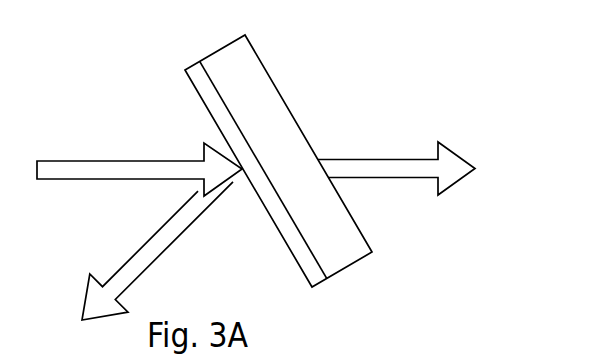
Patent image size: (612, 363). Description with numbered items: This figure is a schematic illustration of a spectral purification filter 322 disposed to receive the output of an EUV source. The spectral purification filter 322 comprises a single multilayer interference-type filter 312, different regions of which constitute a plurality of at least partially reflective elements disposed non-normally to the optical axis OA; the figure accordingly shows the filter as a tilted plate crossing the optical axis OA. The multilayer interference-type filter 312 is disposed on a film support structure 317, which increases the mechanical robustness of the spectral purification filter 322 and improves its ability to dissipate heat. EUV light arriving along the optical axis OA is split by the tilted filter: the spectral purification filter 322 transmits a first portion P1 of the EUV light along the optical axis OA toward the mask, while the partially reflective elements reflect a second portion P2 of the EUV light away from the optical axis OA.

The multilayer interference-type filter 312 is at (348, 267).
The film support structure 317 is at (200, 97).
The spectral purification filter 322 is at (273, 177).
The first portion of the EUV light P1 is at (385, 159).
The second portion of the EUV light P2 is at (173, 243).
The optical axis OA is at (457, 183).